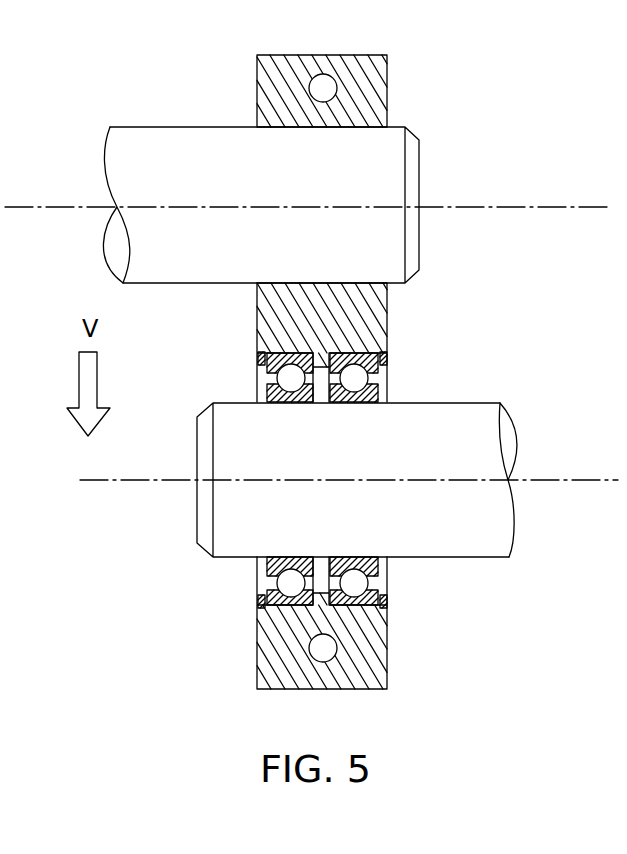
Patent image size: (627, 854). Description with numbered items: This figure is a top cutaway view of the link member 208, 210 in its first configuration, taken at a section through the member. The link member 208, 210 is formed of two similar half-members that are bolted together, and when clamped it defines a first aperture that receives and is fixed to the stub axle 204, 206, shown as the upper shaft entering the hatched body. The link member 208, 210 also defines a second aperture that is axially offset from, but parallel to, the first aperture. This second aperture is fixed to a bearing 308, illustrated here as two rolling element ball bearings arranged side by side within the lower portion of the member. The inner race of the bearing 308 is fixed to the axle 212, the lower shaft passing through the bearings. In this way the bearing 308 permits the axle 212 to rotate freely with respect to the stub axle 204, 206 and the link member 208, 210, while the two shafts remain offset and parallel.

The stub axle 204 is at (377, 165).
The stub axle 206 is at (334, 182).
The link member 208 is at (368, 318).
The link member 210 is at (411, 372).
The axle 212 is at (462, 418).
The bearing 308 is at (375, 568).